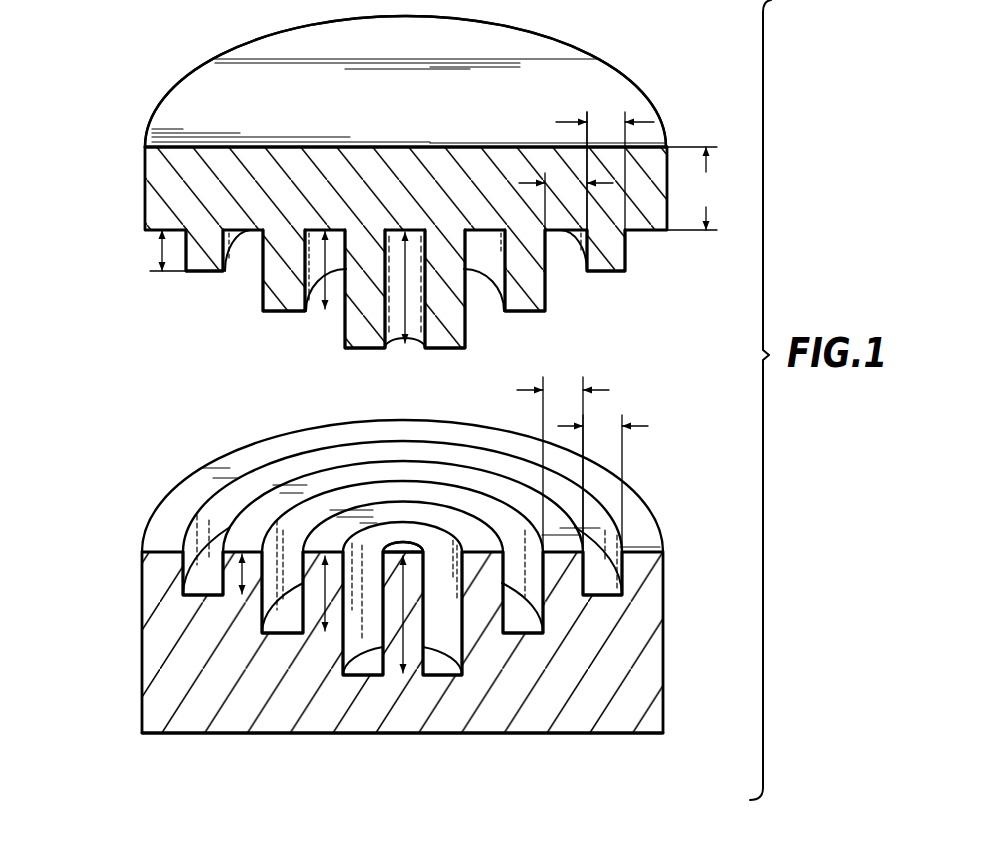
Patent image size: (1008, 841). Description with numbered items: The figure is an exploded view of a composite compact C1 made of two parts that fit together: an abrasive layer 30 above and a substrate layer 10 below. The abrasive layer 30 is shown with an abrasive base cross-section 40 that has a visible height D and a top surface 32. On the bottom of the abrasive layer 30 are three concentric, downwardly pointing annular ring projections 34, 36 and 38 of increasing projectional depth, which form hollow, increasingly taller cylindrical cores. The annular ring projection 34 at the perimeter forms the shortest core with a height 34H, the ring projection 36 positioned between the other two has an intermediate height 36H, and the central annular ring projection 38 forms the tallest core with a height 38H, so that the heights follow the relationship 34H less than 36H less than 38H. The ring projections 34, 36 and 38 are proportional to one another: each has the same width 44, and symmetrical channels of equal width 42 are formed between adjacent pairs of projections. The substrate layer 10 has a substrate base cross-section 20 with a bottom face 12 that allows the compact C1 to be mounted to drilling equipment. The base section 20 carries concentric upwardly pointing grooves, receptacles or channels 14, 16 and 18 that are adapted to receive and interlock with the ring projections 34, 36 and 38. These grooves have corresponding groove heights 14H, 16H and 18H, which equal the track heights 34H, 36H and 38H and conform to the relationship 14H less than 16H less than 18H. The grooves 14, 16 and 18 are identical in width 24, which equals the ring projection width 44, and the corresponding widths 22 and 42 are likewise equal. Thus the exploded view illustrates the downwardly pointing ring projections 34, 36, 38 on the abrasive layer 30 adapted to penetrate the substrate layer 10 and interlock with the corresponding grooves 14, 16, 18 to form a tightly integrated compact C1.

The substrate layer 10 is at (118, 498).
The bottom face 12 is at (562, 735).
The groove 14 is at (183, 584).
The groove height 14H is at (253, 597).
The groove 16 is at (287, 625).
The groove height 16H is at (337, 603).
The groove 18 is at (407, 645).
The groove height 18H is at (363, 668).
The substrate base cross-section 20 is at (610, 666).
The width 22 is at (563, 383).
The groove width 24 is at (602, 422).
The abrasive layer 30 is at (112, 107).
The top surface 32 is at (213, 85).
The annular ring projection 34 is at (208, 272).
The height 34H is at (157, 247).
The annular ring projection 36 is at (285, 315).
The height 36H is at (347, 272).
The annular ring projection 38 is at (370, 348).
The height 38H is at (412, 308).
The abrasive base cross-section 40 is at (357, 167).
The channel width 42 is at (568, 185).
The ring projection width 44 is at (603, 120).
The composite compact C1 is at (685, 335).
The visible height D is at (692, 188).